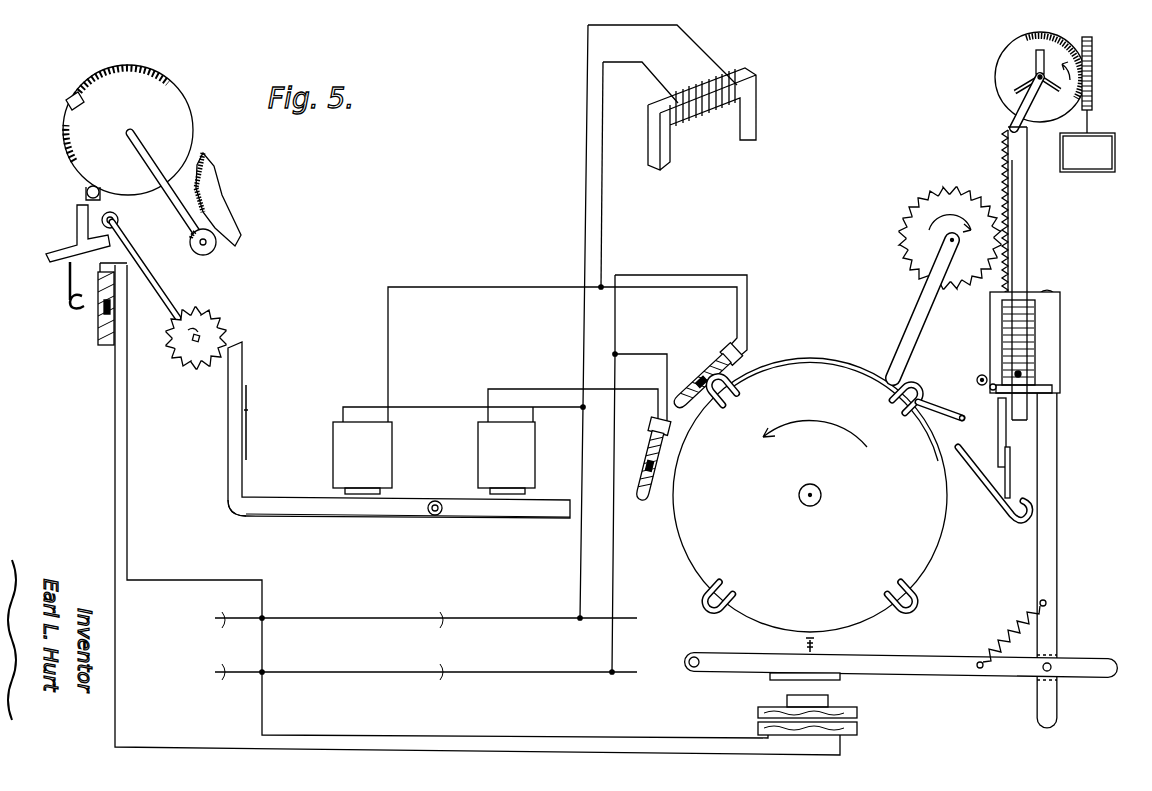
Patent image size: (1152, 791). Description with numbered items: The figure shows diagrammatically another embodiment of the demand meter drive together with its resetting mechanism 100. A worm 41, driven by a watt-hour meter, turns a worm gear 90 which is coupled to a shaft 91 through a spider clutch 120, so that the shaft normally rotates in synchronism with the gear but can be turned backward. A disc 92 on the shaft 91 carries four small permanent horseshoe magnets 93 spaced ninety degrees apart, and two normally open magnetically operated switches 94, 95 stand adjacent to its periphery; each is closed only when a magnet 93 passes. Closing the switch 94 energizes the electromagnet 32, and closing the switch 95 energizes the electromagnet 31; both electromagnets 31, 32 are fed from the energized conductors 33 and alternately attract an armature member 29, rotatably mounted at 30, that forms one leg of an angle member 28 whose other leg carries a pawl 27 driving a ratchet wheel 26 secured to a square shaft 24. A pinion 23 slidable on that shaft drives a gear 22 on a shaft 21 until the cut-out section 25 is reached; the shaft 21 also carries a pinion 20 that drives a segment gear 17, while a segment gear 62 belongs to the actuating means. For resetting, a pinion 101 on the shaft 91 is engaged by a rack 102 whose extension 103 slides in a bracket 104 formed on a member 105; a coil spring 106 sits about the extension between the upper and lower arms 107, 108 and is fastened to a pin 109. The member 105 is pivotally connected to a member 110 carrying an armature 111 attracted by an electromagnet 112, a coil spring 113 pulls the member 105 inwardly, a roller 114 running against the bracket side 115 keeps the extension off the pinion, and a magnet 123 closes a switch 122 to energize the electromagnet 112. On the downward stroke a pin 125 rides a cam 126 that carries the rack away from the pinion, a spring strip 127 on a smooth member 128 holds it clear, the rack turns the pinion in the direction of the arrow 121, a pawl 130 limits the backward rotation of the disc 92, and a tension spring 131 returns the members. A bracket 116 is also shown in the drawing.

The segment gear 17 is at (230, 222).
The pinion 20 is at (212, 250).
The shaft 21 is at (144, 163).
The gear 22 is at (135, 67).
The pinion 23 is at (86, 193).
The square shaft 24 is at (155, 287).
The cut-out section of teeth 25 is at (66, 100).
The ratchet wheel 26 is at (220, 331).
The pawl 27 is at (243, 360).
The angle member 28 is at (244, 498).
The armature member 29 is at (494, 518).
The pivot mounting 30 is at (432, 515).
The electromagnet 31 is at (523, 445).
The electromagnet 32 is at (387, 445).
The energized conductors 33 is at (426, 646).
The worm 41 is at (1093, 58).
The segment gear 62 is at (650, 110).
The worm gear 90 is at (1038, 34).
The shaft 91 is at (906, 327).
The disc 92 is at (932, 562).
The permanent horseshoe magnets 93 is at (730, 408).
The magnetically operated switch 94 is at (708, 366).
The magnetically operated switch 95 is at (648, 445).
The resetting mechanism 100 is at (1032, 290).
The pinion 101 is at (927, 194).
The rack 102 is at (1027, 188).
The extension of the rack 103 is at (1014, 268).
The bracket 104 is at (1058, 305).
The member 105 is at (1050, 534).
The coil spring 106 is at (1028, 332).
The upper arm of bracket 107 is at (1008, 298).
The lower arm of bracket 108 is at (1046, 393).
The pin 109 is at (1022, 374).
The member 110 is at (877, 652).
The armature 111 is at (840, 678).
The electromagnet 112 is at (860, 714).
The coil spring 113 is at (1004, 630).
The roller 114 is at (978, 378).
The side of bracket 115 is at (119, 220).
The bracket lever 116 is at (76, 224).
The spider clutch 120 is at (1036, 62).
The arrow 121 is at (928, 215).
The magnetically operated switch 122 is at (98, 326).
The permanent magnet 123 is at (68, 302).
The pin 125 is at (990, 388).
The cam 126 is at (984, 482).
The spring strip 127 is at (1010, 478).
The smooth member 128 is at (1006, 440).
The pawl 130 is at (936, 414).
The tension spring 131 is at (806, 645).